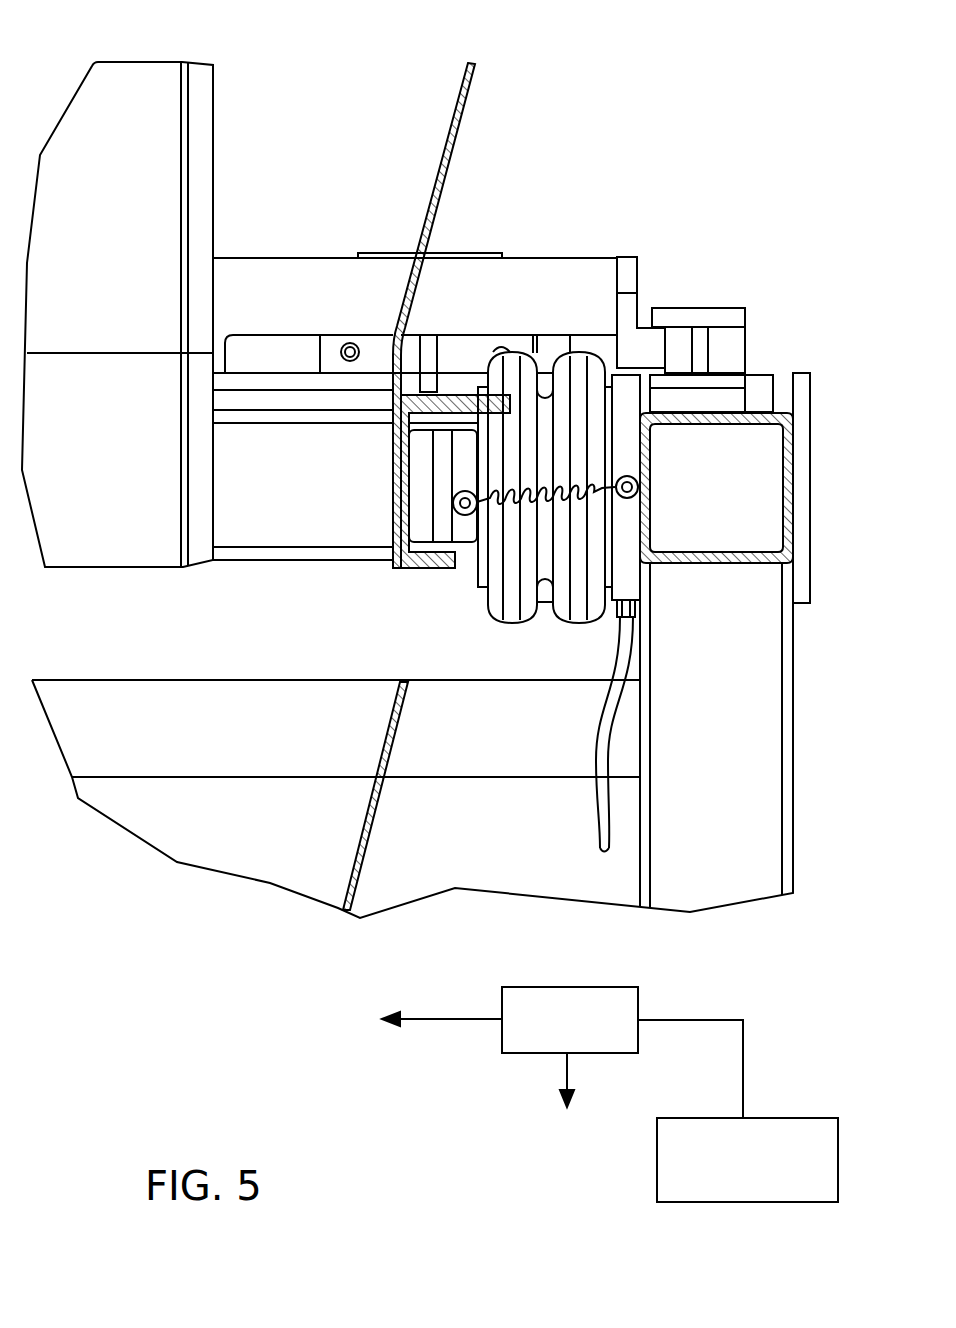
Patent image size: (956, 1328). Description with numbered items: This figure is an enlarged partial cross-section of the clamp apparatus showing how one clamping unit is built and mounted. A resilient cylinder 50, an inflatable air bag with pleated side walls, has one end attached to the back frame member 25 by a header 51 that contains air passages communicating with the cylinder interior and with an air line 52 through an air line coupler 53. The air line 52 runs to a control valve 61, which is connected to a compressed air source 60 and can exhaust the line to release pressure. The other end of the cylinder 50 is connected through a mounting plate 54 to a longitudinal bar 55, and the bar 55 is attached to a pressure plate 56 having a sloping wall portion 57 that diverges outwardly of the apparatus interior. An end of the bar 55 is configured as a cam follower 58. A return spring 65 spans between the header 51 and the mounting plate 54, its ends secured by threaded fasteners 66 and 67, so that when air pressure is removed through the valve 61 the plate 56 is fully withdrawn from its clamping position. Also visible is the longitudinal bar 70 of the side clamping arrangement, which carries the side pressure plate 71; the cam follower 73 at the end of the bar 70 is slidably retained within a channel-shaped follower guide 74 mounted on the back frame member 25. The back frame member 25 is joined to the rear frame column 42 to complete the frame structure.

The back frame member 25 is at (782, 503).
The rear frame column 42 is at (795, 782).
The resilient cylinder 50 is at (578, 620).
The header 51 is at (635, 588).
The air line 52 is at (607, 811).
The air line coupler 53 is at (640, 612).
The mounting plate 54 is at (462, 470).
The longitudinal bar 55 is at (410, 425).
The pressure plate 56 is at (462, 132).
The sloping wall portion 57 is at (458, 92).
The cam follower 58 is at (345, 383).
The compressed air source 60 is at (790, 1118).
The control valve 61 is at (562, 985).
The return spring 65 is at (523, 500).
The threaded fastener 66 is at (640, 487).
The threaded fastener 67 is at (462, 515).
The longitudinal bar 70 is at (318, 280).
The side pressure plate 71 is at (142, 98).
The cam follower 73 is at (640, 298).
The follower guide 74 is at (725, 318).